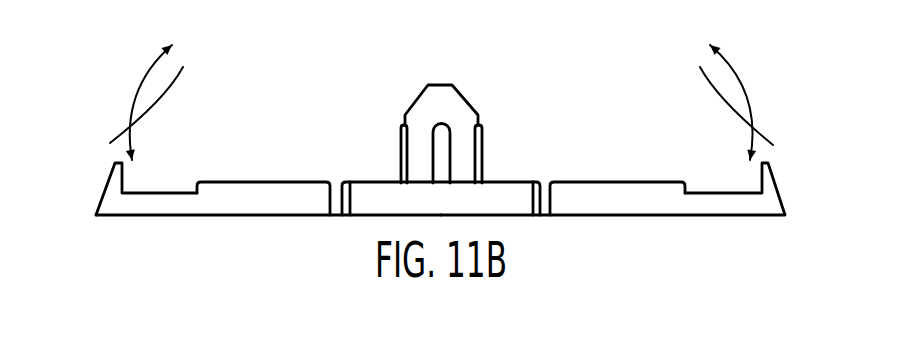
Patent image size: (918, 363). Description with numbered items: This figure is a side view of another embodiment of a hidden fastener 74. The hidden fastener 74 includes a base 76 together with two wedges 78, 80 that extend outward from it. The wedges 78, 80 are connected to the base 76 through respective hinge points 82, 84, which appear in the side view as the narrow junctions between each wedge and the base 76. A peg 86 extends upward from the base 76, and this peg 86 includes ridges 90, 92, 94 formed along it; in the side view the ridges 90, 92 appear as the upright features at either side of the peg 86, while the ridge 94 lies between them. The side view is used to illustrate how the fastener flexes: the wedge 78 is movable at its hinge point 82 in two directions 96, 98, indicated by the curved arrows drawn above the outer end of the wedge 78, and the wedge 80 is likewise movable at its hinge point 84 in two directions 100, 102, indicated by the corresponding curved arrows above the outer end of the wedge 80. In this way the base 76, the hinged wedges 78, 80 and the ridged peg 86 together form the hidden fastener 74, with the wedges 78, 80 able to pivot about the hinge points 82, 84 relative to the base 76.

The hidden fastener 74 is at (432, 110).
The base 76 is at (515, 195).
The wedge 78 is at (148, 205).
The wedge 80 is at (662, 218).
The hinge point 82 is at (332, 175).
The hinge point 84 is at (550, 177).
The peg 86 is at (443, 102).
The ridge 90 is at (399, 153).
The ridge 92 is at (484, 143).
The ridge 94 is at (440, 152).
The direction 96 is at (117, 127).
The direction 98 is at (153, 110).
The direction 100 is at (743, 87).
The direction 102 is at (722, 105).